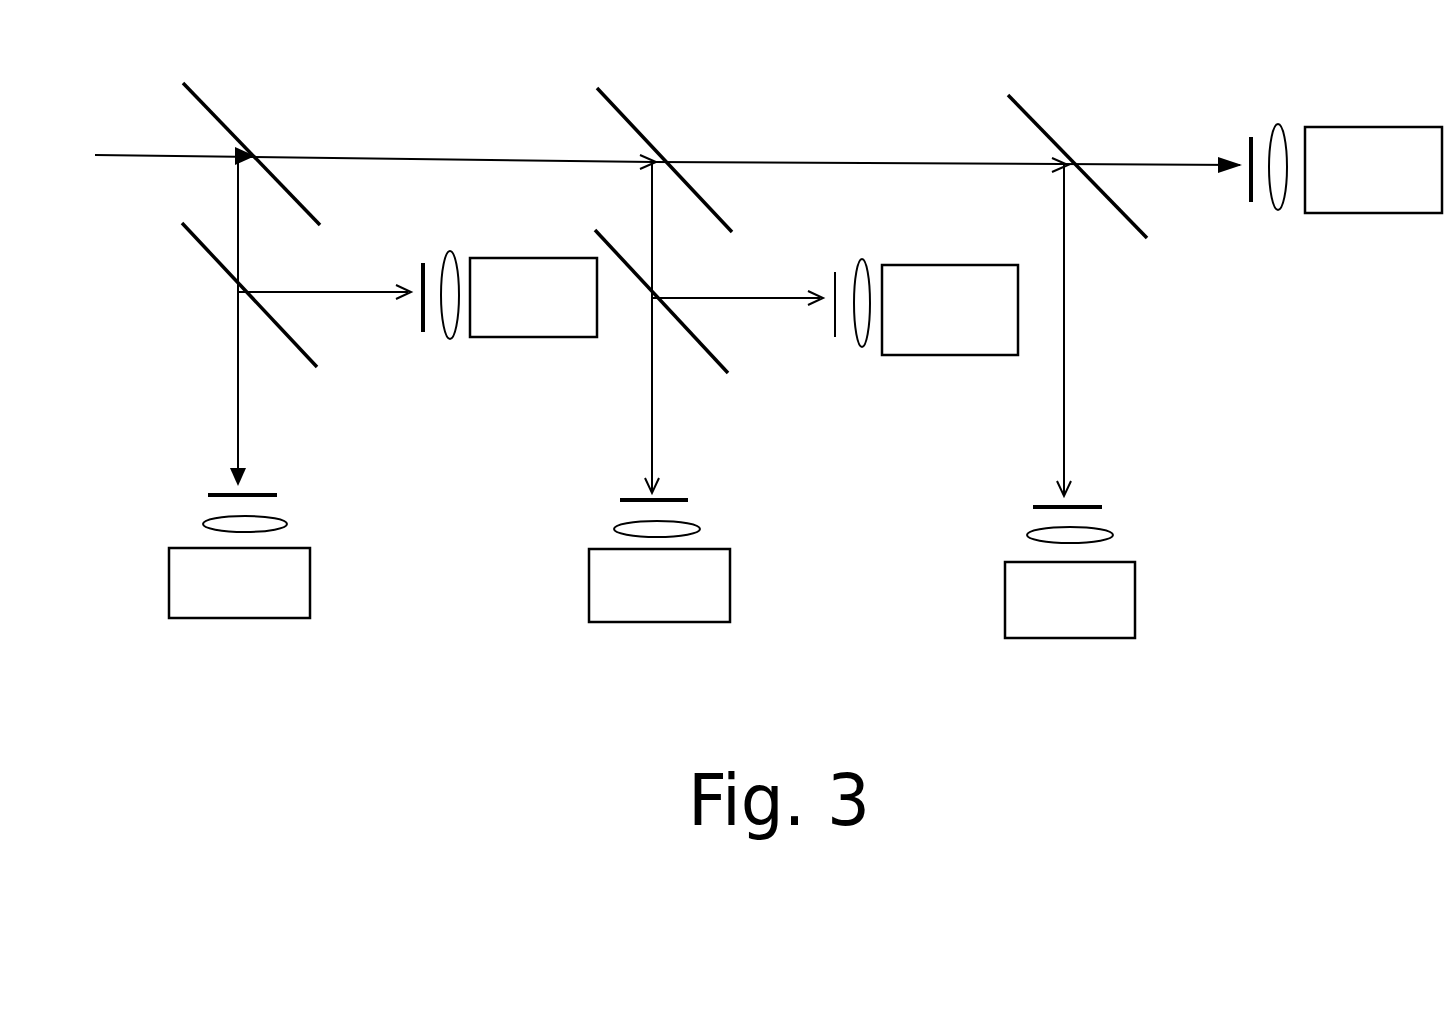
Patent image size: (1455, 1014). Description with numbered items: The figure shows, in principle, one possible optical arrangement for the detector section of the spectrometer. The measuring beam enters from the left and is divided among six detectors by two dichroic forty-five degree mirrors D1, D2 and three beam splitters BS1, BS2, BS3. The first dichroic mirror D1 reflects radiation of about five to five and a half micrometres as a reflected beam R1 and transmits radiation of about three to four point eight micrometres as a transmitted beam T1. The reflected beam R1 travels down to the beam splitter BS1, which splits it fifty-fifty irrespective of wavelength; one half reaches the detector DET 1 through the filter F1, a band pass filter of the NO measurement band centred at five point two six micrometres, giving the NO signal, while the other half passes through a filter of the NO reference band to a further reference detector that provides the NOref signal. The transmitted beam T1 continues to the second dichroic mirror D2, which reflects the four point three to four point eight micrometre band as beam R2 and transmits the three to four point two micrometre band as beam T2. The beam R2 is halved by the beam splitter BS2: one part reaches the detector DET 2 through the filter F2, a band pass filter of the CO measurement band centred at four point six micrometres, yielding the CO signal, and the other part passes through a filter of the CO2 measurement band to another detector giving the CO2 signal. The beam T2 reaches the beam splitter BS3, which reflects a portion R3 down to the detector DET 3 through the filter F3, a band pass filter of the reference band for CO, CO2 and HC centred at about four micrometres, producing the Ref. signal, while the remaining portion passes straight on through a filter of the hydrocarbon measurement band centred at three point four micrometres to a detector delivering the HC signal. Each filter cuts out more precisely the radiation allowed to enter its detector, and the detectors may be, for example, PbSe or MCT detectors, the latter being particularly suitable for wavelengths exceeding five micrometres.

The dichroic mirror D1 is at (221, 140).
The dichroic mirror D2 is at (632, 145).
The beam splitter BS1 is at (208, 284).
The beam splitter BS2 is at (621, 290).
The beam splitter BS3 is at (1037, 151).
The transmitted beam T1 is at (374, 137).
The transmitted beam from D2 T2 is at (941, 143).
The reflected beam R1 is at (304, 321).
The reflected beam from D2 R2 is at (714, 327).
The reflected beam from BS3 R3 is at (1038, 330).
The filter of NO measurement band F1 is at (217, 505).
The filter of CO measurement band F2 is at (630, 506).
The filter of reference band F3 is at (1044, 514).
The detector DET 1 is at (239, 583).
The detector DET 2 is at (659, 585).
The detector DET 3 is at (1070, 600).
The NO measurement channel NO is at (309, 616).
The CO measurement channel CO is at (732, 614).
The reference channel Ref. is at (1148, 622).
The NO reference channel NOref is at (533, 355).
The CO2 measurement channel CO2 is at (950, 365).
The HC measurement channel HC is at (1373, 226).